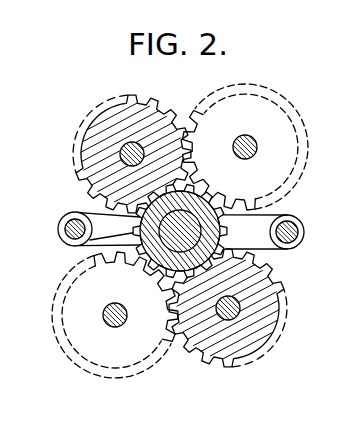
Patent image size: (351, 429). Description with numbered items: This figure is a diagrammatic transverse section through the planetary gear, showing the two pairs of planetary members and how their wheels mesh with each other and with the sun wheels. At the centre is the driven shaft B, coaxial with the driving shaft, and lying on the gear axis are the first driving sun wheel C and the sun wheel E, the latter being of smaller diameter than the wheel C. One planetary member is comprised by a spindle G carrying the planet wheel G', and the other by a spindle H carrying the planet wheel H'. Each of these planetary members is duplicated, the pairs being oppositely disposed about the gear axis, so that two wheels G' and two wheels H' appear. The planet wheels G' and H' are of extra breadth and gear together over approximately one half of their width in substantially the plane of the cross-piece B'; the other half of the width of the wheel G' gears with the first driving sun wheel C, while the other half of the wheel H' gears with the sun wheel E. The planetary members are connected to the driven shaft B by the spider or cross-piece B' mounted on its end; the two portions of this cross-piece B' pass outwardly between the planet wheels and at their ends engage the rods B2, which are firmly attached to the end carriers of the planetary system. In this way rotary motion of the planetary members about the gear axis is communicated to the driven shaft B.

The driven shaft B is at (163, 238).
The cross-piece B' is at (265, 246).
The rod B2 is at (293, 223).
The first driving sun wheel C is at (72, 257).
The sun wheel E is at (138, 220).
The spindle G is at (150, 251).
The planet wheel G' is at (187, 241).
The spindle H is at (168, 248).
The planet wheel H' is at (187, 216).